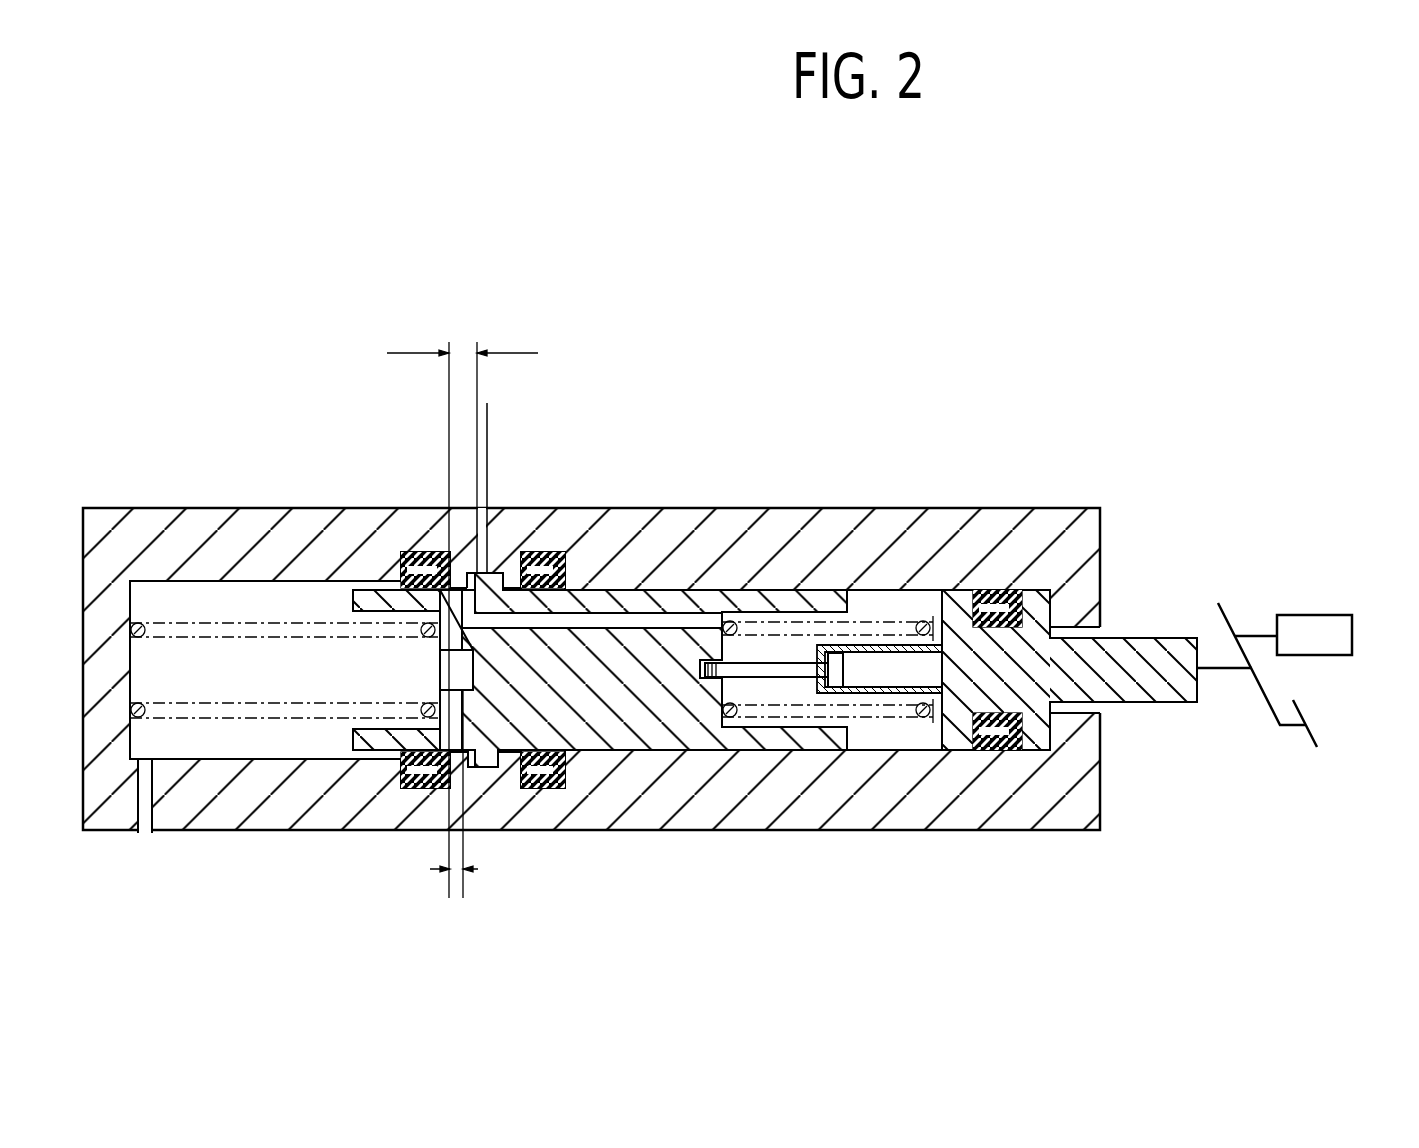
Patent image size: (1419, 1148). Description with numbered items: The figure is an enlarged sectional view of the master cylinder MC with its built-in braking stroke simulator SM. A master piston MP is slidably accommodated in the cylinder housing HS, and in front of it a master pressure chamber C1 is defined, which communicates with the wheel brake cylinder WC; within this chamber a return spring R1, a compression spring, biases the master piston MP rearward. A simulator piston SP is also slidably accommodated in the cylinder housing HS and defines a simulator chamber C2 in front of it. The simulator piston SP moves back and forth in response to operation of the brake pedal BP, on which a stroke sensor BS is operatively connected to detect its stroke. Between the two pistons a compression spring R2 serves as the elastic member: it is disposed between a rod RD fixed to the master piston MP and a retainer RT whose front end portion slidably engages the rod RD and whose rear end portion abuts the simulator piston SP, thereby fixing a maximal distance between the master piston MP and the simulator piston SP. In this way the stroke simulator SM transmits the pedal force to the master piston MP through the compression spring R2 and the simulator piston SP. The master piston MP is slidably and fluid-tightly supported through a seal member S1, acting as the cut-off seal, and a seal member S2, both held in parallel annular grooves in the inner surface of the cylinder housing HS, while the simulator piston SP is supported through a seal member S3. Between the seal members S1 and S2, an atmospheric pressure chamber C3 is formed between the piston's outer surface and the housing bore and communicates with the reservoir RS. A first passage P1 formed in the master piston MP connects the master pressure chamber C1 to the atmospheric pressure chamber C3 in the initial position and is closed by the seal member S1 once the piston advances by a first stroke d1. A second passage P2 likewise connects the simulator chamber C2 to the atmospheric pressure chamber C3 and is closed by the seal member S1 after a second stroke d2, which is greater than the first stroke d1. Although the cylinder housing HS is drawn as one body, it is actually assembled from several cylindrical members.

The cylinder housing HS is at (103, 520).
The master cylinder MC is at (593, 622).
The return spring R1 is at (270, 625).
The reservoir RS is at (498, 471).
The atmospheric pressure chamber C3 is at (495, 575).
The second passage P2 is at (654, 677).
The compression spring R2 is at (863, 627).
The retainer RT is at (887, 643).
The stroke simulator SM is at (1097, 660).
The stroke sensor BS is at (1290, 612).
The brake pedal BP is at (1322, 745).
The simulator piston SP is at (1160, 690).
The wheel brake cylinder WC is at (145, 834).
The master pressure chamber C1 is at (220, 740).
The seal member S1 is at (407, 782).
The first stroke d1 is at (454, 813).
The first passage P1 is at (470, 745).
The seal member S2 is at (545, 790).
The master piston MP is at (625, 705).
The rod RD is at (776, 672).
The simulator chamber C2 is at (895, 735).
The seal member S3 is at (1005, 755).
The second stroke d2 is at (462, 600).